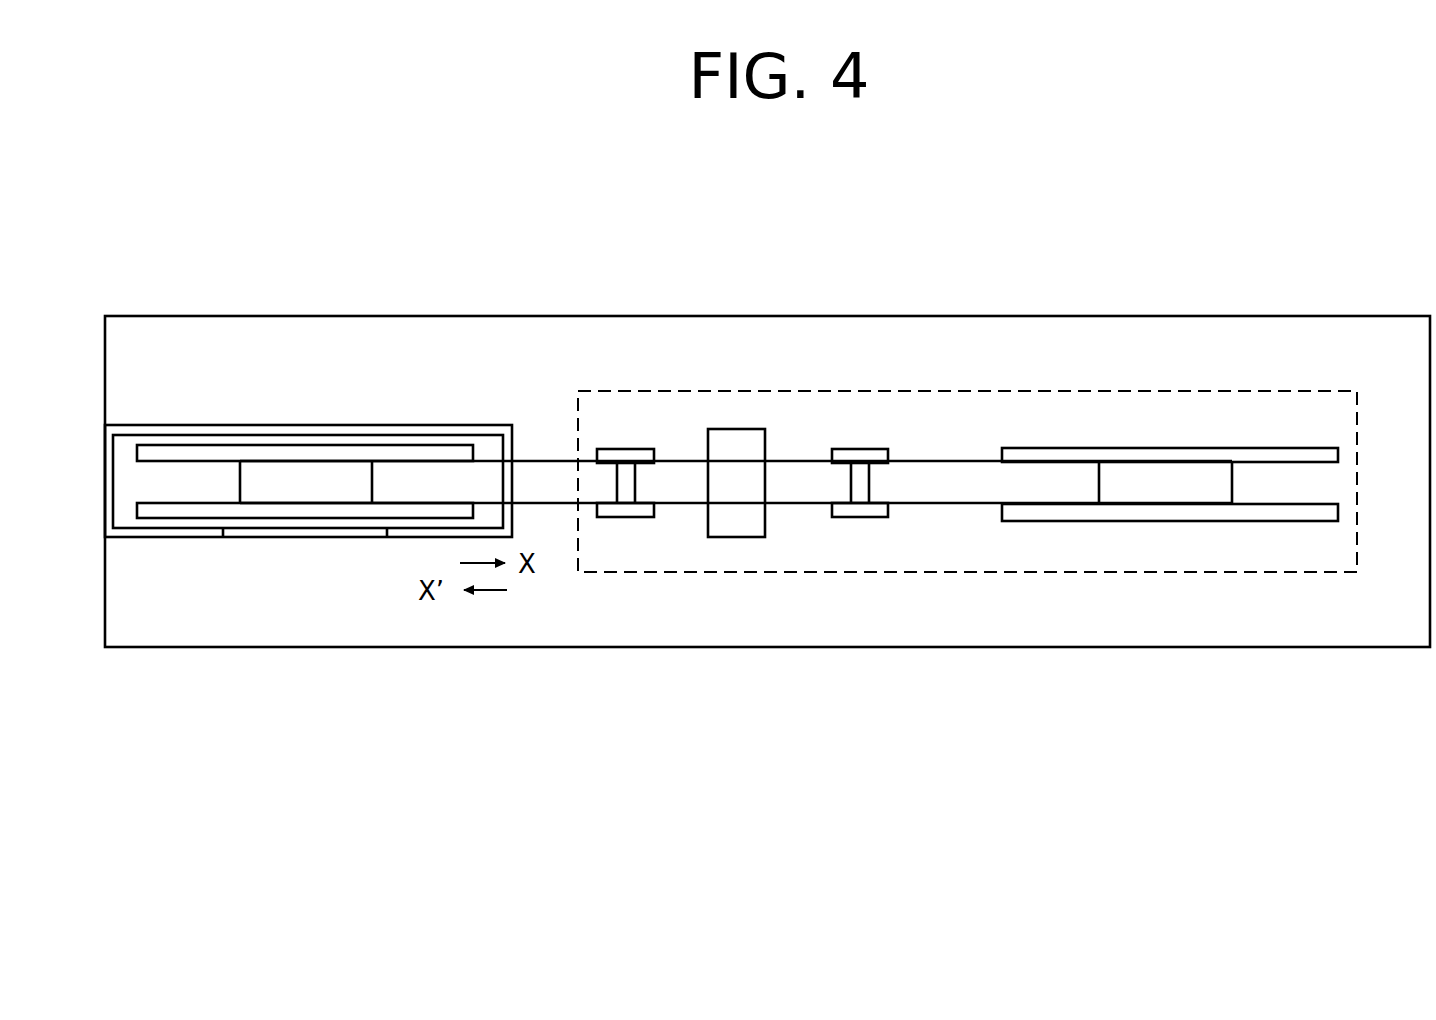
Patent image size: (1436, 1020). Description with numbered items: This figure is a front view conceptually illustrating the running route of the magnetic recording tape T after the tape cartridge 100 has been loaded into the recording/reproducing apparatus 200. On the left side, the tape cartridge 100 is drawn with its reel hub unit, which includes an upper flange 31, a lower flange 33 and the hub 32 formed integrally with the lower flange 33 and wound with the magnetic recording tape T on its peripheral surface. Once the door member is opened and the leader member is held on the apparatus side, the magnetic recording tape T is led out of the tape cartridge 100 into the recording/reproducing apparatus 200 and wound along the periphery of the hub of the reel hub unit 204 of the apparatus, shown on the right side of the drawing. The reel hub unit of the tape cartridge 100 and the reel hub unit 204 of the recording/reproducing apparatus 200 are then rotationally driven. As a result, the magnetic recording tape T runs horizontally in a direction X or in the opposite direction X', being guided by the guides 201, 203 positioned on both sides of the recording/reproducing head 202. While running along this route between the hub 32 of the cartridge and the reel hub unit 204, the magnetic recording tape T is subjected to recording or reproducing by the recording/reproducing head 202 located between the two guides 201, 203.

The recording/reproducing apparatus 200 is at (955, 315).
The tape cartridge 100 is at (317, 422).
The upper flange 31 is at (163, 452).
The hub 32 is at (280, 483).
The lower flange 33 is at (157, 512).
The guide 201 is at (617, 449).
The recording/reproducing head 202 is at (735, 429).
The guide 203 is at (860, 449).
The reel hub unit 204 is at (1173, 436).
The magnetic recording tape T is at (938, 508).